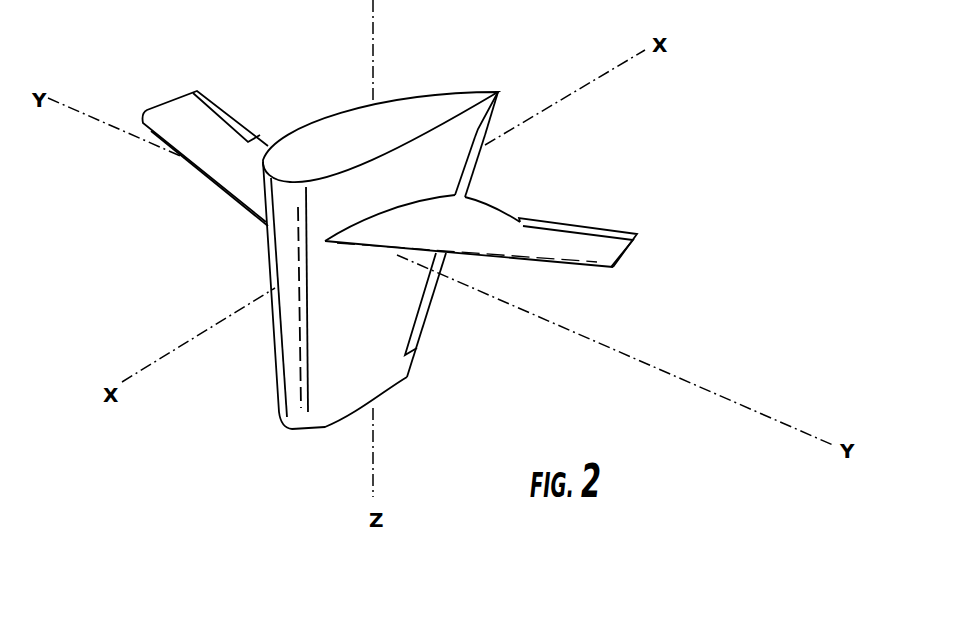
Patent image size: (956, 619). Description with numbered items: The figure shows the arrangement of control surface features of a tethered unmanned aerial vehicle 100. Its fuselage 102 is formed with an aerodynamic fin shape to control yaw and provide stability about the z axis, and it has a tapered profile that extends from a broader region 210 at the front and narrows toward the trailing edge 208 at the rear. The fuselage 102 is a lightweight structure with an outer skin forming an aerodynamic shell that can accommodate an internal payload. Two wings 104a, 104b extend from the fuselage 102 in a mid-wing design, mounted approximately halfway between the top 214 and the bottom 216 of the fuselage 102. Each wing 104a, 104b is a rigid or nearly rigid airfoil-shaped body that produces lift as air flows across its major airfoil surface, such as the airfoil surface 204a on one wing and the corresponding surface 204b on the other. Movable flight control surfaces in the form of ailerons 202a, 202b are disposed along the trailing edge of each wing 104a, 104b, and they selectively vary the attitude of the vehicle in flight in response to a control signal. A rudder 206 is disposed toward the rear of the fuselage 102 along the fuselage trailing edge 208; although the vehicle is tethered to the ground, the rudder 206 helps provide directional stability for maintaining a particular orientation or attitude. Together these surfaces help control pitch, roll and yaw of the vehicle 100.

The aircraft 100 is at (520, 162).
The fuselage 102 is at (273, 365).
The wing 104a is at (208, 180).
The wing 104b is at (582, 257).
The aileron 202a is at (212, 107).
The aileron 202b is at (573, 225).
The airfoil surface 204a is at (185, 118).
The second wing deflection direction 204b is at (474, 246).
The rudder 206 is at (485, 143).
The trailing edge 208 is at (488, 88).
The broader region 210 is at (282, 237).
The top 214 is at (338, 127).
The bottom 216 is at (325, 428).